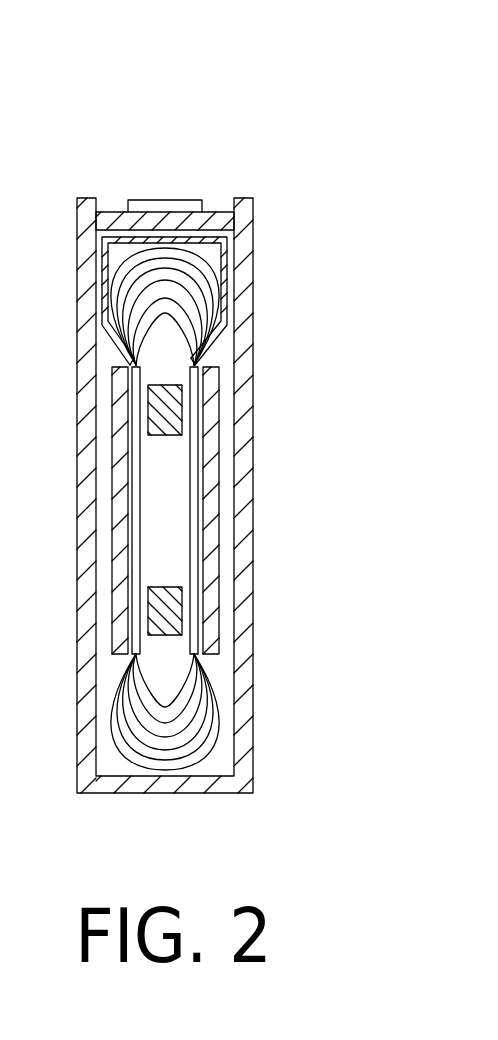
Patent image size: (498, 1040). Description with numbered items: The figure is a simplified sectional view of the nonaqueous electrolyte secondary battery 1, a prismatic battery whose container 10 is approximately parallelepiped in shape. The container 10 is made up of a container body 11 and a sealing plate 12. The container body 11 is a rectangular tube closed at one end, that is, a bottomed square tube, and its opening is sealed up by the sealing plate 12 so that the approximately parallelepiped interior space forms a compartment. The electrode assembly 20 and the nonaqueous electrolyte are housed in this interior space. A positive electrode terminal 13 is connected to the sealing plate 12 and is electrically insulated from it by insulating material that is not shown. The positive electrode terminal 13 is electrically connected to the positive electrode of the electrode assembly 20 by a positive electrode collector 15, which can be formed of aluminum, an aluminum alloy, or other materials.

The nonaqueous electrolyte secondary battery 1 is at (232, 143).
The container 10 is at (253, 442).
The container body 11 is at (254, 517).
The sealing plate 12 is at (110, 209).
The positive electrode terminal 13 is at (170, 199).
The positive electrode collector 15 is at (228, 299).
The electrode assembly 20 is at (210, 263).